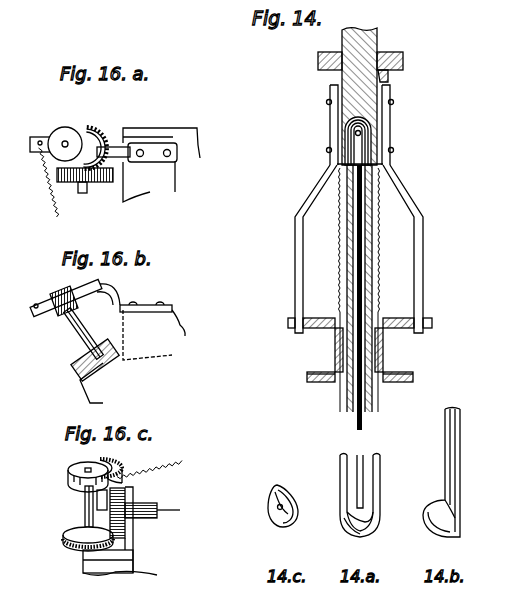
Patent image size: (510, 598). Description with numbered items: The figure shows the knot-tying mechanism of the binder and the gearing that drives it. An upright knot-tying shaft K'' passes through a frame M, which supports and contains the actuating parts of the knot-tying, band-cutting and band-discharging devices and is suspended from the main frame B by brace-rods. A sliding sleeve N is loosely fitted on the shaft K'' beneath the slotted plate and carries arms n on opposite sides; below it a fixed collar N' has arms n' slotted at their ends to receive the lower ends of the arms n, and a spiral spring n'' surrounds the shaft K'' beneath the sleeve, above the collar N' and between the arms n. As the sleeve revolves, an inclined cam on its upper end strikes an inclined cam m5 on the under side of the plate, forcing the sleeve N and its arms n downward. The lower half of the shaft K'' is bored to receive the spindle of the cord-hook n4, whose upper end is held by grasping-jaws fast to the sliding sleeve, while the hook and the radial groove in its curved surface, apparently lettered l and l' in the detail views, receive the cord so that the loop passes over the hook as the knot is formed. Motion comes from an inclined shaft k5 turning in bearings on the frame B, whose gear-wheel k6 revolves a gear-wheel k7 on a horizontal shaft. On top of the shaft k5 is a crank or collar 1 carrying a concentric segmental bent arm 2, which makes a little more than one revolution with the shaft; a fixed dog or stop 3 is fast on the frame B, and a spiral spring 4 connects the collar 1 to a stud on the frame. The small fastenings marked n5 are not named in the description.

In FIG. 14, the knot-tying shaft K'' is at (359, 88).
In FIG. 14, the inclined cam m5 is at (364, 69).
In FIG. 14, the fastening bolts n5 is at (400, 88).
In FIG. 14, the sliding sleeve N is at (368, 125).
In FIG. 14, the arms n is at (360, 249).
In FIG. 14, the spiral spring n'' is at (351, 288).
In FIG. 14, the arms n' is at (359, 324).
In FIG. 14, the fixed collar N' is at (367, 350).
In FIG. 14, the frame M is at (413, 378).
In FIG. 14, the cord-hook spindle n4 is at (369, 297).
In FIG. 14a, the cord-hook spindle n4 is at (360, 496).
In FIG. 14b, the cord-hook spindle n4 is at (443, 473).
In FIG. 14c, the tip piece l is at (283, 502).
In FIG. 14c, the tip piece aperture l' is at (271, 495).
In FIG. 16a, the crank or collar 1 is at (56, 172).
In FIG. 16b, the crank or collar 1 is at (62, 303).
In FIG. 16c, the crank or collar 1 is at (88, 477).
In FIG. 16a, the concentric segmental bent arm 2 is at (80, 150).
In FIG. 16b, the concentric segmental bent arm 2 is at (73, 301).
In FIG. 16c, the concentric segmental bent arm 2 is at (111, 469).
In FIG. 16a, the fixed dog or stop 3 is at (113, 150).
In FIG. 16b, the fixed dog or stop 3 is at (134, 293).
In FIG. 16c, the spiral spring 4 is at (149, 467).
In FIG. 16a, the inclined shaft k5 is at (85, 187).
In FIG. 16b, the inclined shaft k5 is at (87, 334).
In FIG. 16c, the inclined shaft k5 is at (85, 506).
In FIG. 16b, the gear-wheel k6 is at (88, 360).
In FIG. 16c, the gear-wheel k6 is at (66, 530).
In FIG. 16c, the gear-wheel k7 is at (126, 489).
In FIG. 16a, the frame B is at (161, 165).
In FIG. 16b, the frame B is at (132, 356).